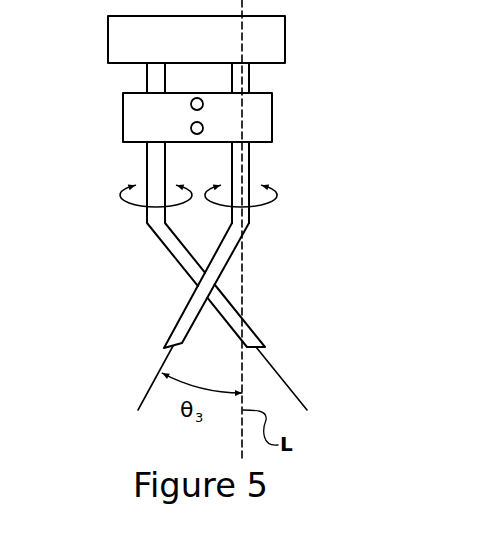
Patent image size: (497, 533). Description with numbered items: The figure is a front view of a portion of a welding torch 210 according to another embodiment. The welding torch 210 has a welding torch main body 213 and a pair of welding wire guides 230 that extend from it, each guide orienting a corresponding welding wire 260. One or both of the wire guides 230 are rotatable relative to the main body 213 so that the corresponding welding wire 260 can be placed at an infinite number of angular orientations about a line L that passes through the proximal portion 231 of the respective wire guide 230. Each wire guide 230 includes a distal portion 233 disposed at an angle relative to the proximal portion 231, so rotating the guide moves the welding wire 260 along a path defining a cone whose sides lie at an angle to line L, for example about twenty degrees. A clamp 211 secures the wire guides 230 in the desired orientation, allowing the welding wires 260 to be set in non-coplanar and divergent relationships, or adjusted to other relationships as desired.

The welding torch 210 is at (362, 185).
The welding torch main body 213 is at (117, 47).
The clamp 211 is at (133, 118).
The welding wire guides 230 is at (203, 205).
The proximal portion 231 is at (251, 165).
The distal portion 233 is at (183, 318).
The welding wires 260 is at (158, 377).